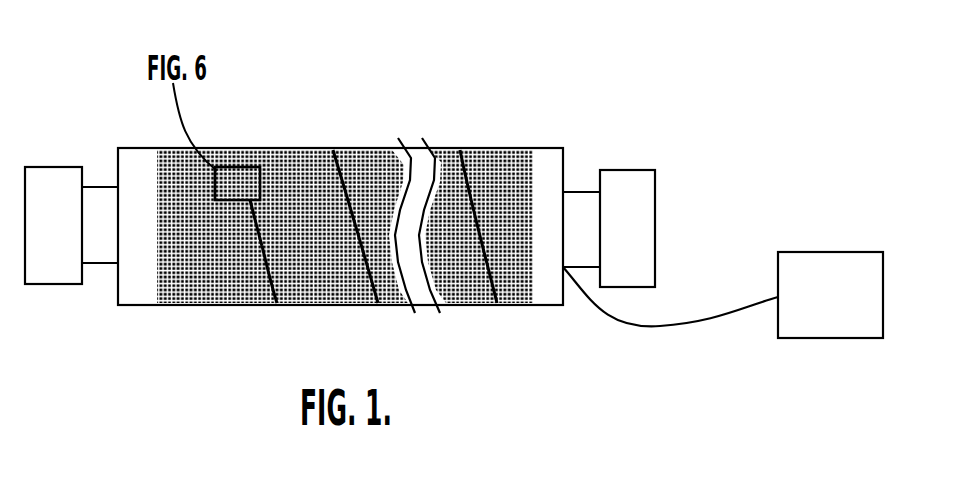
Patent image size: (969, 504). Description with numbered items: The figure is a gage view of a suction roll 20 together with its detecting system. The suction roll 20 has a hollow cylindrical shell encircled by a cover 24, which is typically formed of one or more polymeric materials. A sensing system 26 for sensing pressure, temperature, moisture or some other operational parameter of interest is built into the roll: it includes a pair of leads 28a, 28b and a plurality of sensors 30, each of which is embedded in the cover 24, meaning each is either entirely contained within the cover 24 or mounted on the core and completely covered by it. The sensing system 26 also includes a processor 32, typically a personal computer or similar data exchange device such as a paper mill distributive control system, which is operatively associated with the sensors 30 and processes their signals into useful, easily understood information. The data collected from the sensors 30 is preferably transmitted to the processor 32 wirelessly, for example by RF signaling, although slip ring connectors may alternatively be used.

The suction roll 20 is at (578, 132).
The cover 24 is at (547, 160).
The sensing system 26 is at (657, 345).
The lead 28a is at (260, 213).
The lead 28b is at (258, 248).
The sensors 30 is at (357, 227).
The processor 32 is at (840, 283).